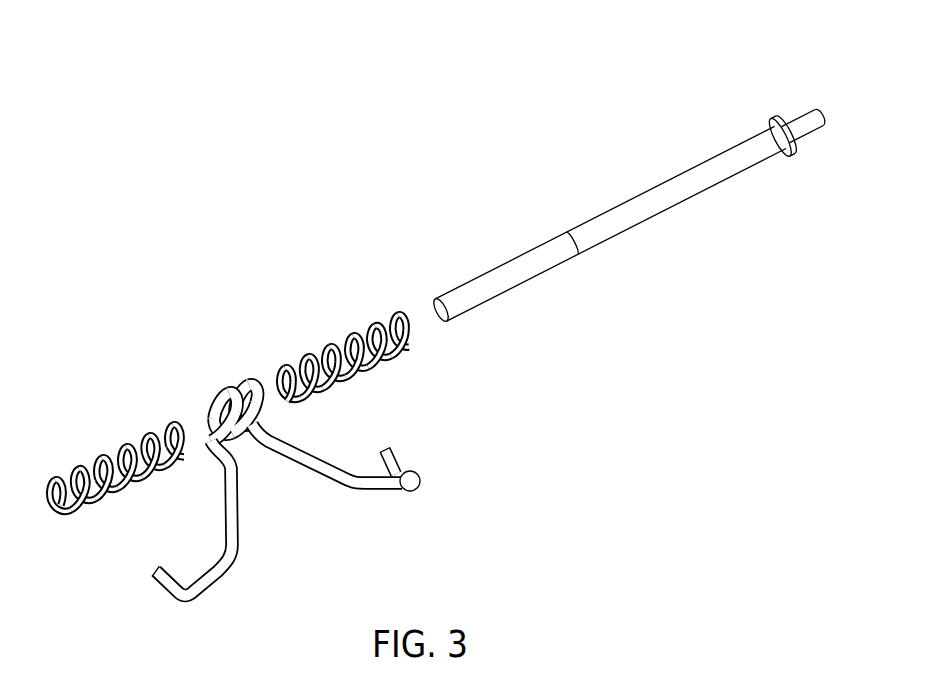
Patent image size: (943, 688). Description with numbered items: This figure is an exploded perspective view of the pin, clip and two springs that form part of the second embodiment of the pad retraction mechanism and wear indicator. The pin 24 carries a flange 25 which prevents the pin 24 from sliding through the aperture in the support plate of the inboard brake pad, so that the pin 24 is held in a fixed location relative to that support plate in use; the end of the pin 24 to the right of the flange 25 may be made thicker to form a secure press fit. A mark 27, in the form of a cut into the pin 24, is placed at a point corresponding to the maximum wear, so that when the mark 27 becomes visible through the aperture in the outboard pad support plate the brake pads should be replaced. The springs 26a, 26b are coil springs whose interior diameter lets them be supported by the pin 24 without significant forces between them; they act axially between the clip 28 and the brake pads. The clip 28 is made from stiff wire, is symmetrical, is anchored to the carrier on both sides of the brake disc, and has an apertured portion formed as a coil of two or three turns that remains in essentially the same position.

The pin 24 is at (700, 180).
The flange 25 is at (767, 120).
The spring 26a is at (343, 337).
The spring 26b is at (128, 447).
The mark 27 is at (563, 233).
The clip 28 is at (243, 500).